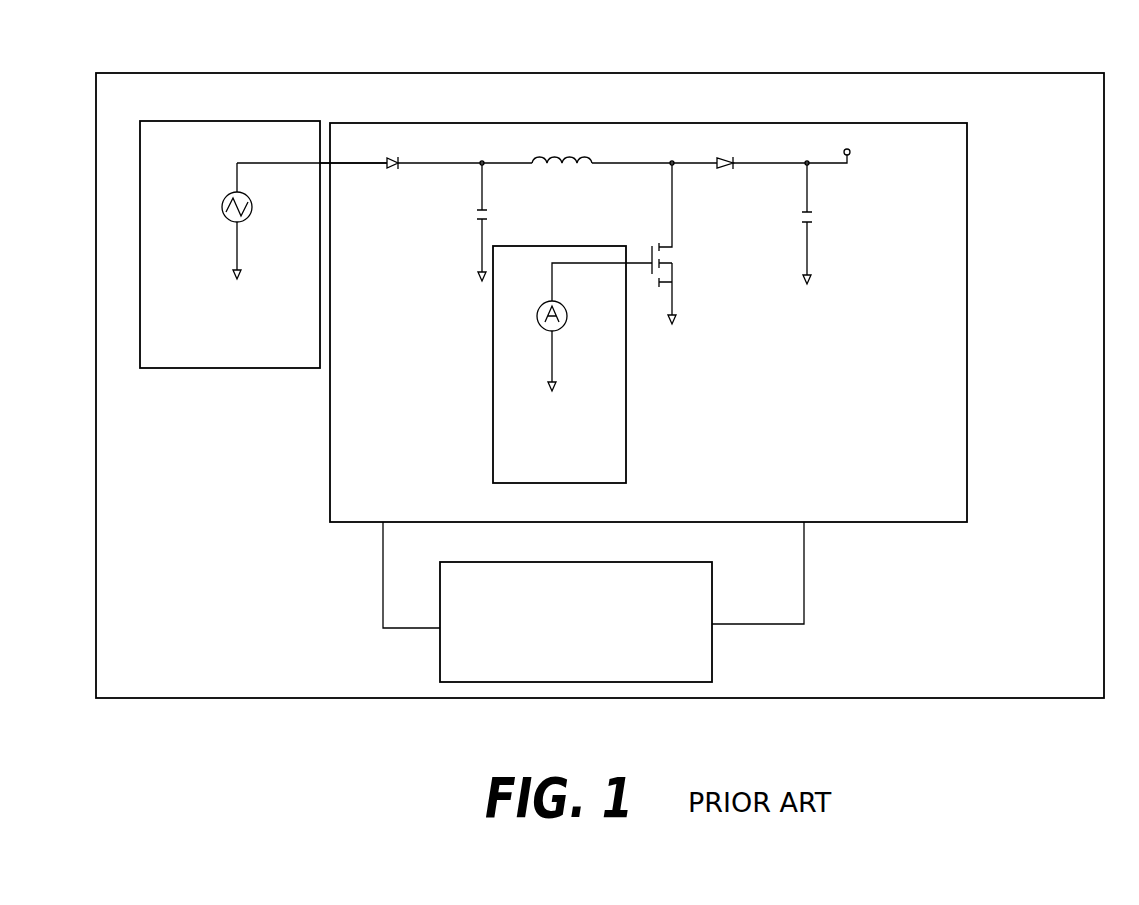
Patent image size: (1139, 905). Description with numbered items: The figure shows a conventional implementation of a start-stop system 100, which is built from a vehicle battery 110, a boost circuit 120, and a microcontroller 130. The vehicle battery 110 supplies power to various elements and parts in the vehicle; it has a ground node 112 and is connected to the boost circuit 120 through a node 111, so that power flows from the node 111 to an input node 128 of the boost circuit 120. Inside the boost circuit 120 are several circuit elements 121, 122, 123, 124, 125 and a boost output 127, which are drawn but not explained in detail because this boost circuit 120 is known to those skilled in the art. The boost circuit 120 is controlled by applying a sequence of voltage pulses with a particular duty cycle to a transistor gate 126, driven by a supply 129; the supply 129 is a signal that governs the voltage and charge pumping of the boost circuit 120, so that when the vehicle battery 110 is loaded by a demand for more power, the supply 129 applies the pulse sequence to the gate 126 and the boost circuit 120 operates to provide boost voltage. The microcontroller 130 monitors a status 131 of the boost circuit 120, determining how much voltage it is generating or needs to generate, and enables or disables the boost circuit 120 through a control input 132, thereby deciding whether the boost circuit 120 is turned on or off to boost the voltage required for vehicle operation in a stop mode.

The start-stop system 100 is at (586, 363).
The vehicle battery 110 is at (230, 269).
The node 111 is at (312, 147).
The ground node 112 is at (237, 234).
The boost circuit 120 is at (648, 307).
The circuit element 121 is at (426, 183).
The circuit element 122 is at (461, 221).
The circuit element 123 is at (577, 177).
The circuit element 124 is at (739, 183).
The circuit element 125 is at (779, 222).
The transistor gate 126 is at (659, 273).
The boost output terminal 127 is at (843, 162).
The input node 128 is at (353, 146).
The supply 129 is at (572, 364).
The microcontroller 130 is at (595, 622).
The status 131 is at (411, 575).
The control input 132 is at (758, 573).